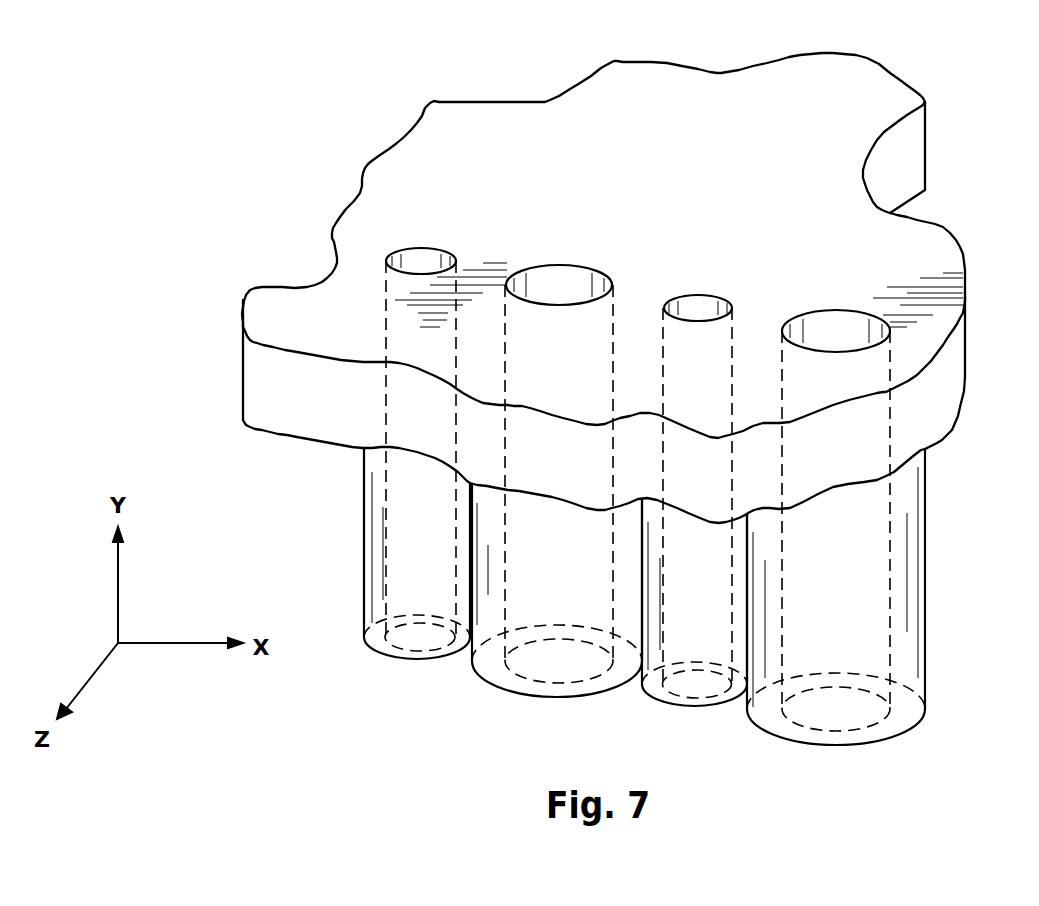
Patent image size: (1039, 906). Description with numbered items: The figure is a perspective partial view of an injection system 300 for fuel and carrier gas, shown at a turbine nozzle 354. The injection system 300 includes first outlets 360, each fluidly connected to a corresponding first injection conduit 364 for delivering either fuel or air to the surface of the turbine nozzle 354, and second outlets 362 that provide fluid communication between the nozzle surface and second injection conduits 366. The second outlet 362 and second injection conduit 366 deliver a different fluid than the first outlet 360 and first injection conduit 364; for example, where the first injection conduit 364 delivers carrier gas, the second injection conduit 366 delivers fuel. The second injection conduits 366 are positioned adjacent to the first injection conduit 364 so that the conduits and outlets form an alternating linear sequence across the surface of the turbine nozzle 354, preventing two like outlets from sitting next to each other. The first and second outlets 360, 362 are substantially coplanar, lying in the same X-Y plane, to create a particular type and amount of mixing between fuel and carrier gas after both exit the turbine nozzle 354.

The injection system 300 is at (330, 90).
The turbine nozzle 354 is at (539, 137).
The first outlet 360 is at (558, 283).
The second outlet 362 is at (421, 260).
The first injection conduit 364 is at (530, 665).
The second injection conduit 366 is at (412, 637).